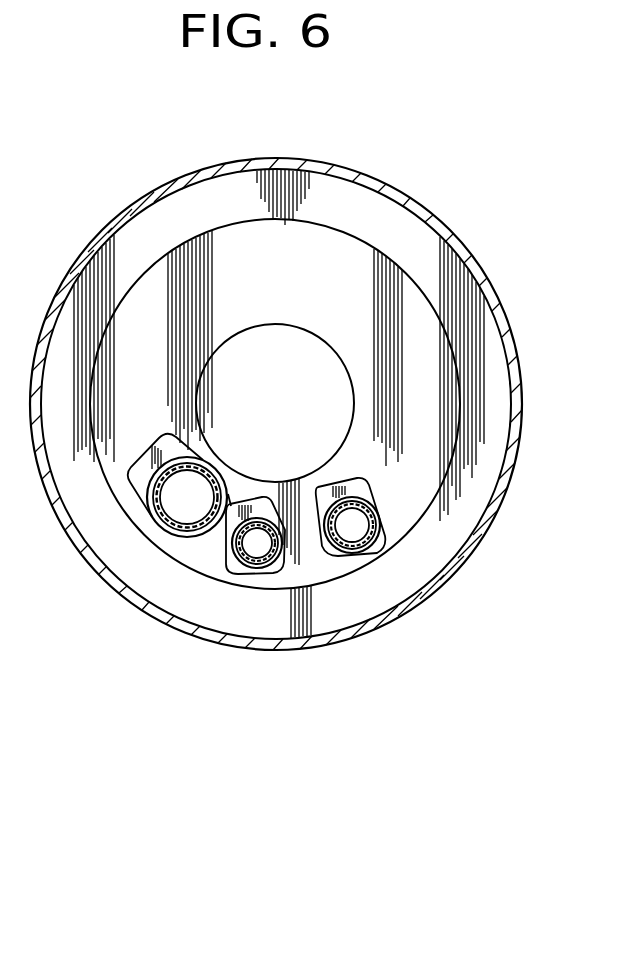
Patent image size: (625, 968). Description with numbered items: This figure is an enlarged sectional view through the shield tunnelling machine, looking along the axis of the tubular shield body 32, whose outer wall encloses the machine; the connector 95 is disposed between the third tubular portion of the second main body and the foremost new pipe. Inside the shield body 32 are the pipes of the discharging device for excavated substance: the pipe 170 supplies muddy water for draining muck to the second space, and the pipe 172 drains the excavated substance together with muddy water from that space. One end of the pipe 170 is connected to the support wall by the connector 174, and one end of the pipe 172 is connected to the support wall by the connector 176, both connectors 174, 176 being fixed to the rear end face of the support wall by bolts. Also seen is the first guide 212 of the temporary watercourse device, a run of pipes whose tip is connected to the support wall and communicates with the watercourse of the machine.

The tubular shield body 32 is at (421, 209).
The connector 95 is at (468, 291).
The first guide 212 is at (178, 463).
The pipe 170 is at (236, 571).
The connector 174 is at (268, 570).
The pipe 172 is at (347, 549).
The connector 176 is at (377, 543).